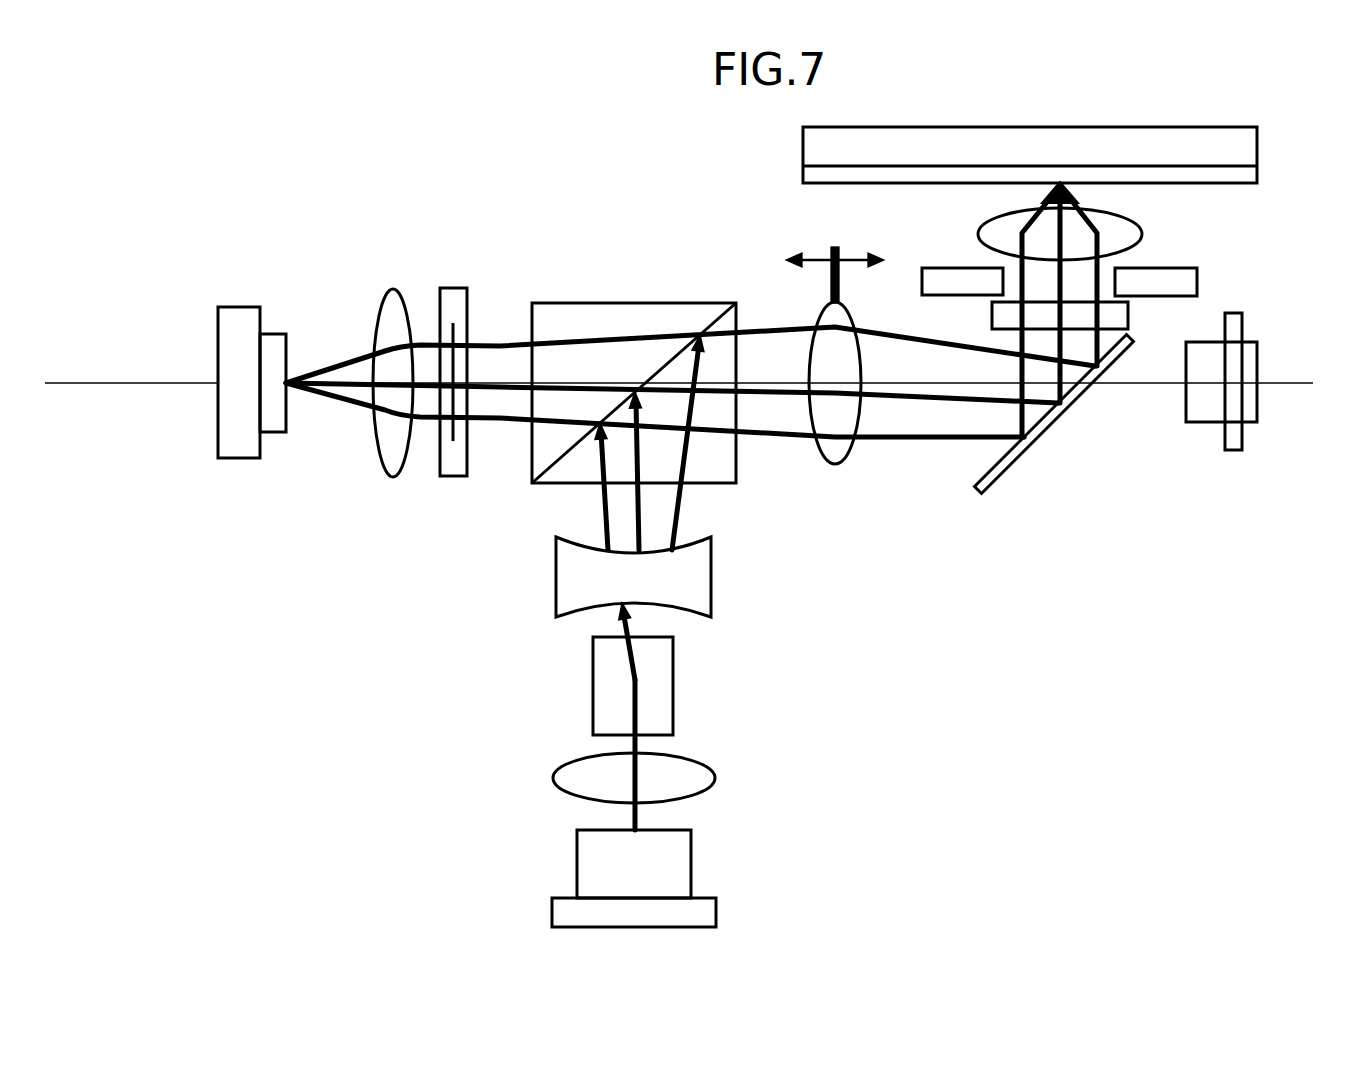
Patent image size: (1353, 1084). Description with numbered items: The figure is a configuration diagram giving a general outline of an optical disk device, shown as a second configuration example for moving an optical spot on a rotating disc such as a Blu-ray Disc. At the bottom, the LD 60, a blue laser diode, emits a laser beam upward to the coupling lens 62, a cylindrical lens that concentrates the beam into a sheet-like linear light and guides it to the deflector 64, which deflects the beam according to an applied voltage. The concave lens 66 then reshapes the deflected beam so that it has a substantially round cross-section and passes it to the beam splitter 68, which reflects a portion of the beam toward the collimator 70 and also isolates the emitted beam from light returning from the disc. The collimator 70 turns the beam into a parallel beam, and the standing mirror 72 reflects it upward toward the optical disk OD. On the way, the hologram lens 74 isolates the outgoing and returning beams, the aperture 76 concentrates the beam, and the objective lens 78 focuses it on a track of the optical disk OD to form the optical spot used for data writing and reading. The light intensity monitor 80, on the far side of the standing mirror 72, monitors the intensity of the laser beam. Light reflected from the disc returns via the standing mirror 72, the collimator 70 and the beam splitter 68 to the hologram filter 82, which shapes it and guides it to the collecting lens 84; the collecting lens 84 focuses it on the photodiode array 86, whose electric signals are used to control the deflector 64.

The LD 60 is at (691, 862).
The coupling lens 62 is at (715, 773).
The deflector 64 is at (673, 683).
The concave lens 66 is at (711, 577).
The beam splitter 68 is at (633, 303).
The collimator 70 is at (835, 464).
The standing mirror 72 is at (1017, 458).
The hologram lens 74 is at (1128, 312).
The aperture 76 is at (1197, 280).
The objective lens 78 is at (1142, 233).
The light intensity monitor 80 is at (1257, 412).
The hologram filter 82 is at (453, 288).
The collecting lens 84 is at (393, 289).
The photodiode array 86 is at (240, 307).
The optical disk OD is at (803, 144).